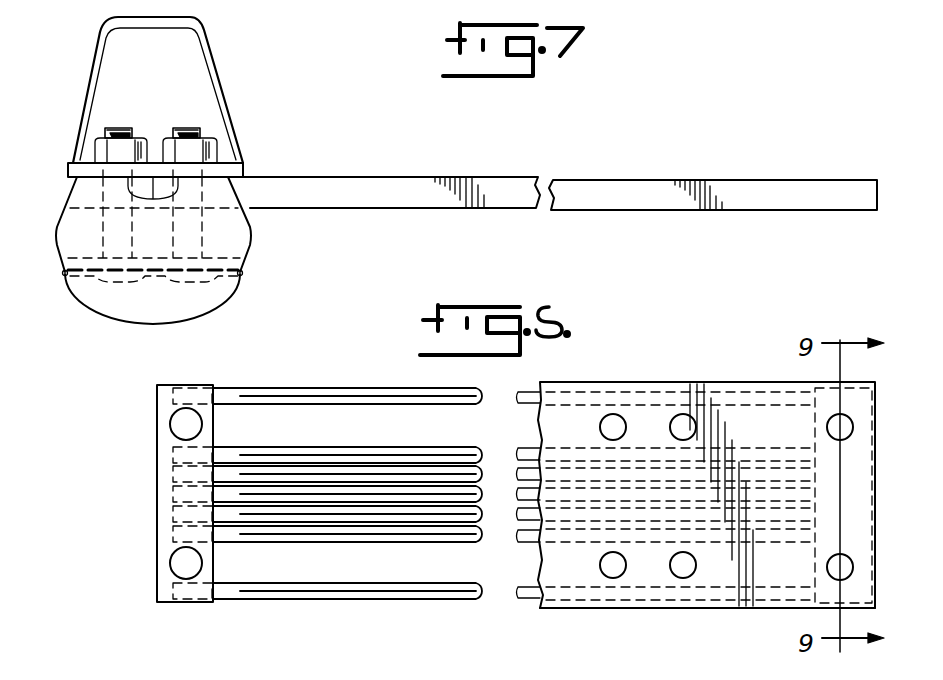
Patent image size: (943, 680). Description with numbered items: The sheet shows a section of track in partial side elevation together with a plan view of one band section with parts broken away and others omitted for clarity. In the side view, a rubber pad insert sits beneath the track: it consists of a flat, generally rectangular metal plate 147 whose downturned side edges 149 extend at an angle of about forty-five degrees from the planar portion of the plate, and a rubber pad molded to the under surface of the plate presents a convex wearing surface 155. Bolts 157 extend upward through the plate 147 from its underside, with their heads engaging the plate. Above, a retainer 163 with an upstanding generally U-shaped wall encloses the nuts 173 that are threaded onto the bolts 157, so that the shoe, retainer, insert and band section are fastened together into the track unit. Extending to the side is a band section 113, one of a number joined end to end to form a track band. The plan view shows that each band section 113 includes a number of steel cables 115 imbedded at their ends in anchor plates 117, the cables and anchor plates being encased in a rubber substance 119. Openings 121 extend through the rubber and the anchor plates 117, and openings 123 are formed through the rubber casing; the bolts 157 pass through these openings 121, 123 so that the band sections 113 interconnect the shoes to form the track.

In FIG. 7, the band section 113 is at (482, 177).
In FIG. 8, the band section 113 is at (583, 630).
In FIG. 8, the steel cables 115 is at (468, 398).
In FIG. 8, the anchor plates 117 is at (157, 508).
In FIG. 8, the rubber substance 119 is at (598, 352).
In FIG. 8, the openings 121 is at (840, 440).
In FIG. 8, the openings 123 is at (686, 414).
In FIG. 7, the metal plate 147 is at (213, 258).
In FIG. 7, the downturned side edges 149 is at (243, 275).
In FIG. 7, the convex wearing surface 155 is at (170, 325).
In FIG. 7, the bolts 157 is at (190, 127).
In FIG. 7, the retainers 163 is at (222, 60).
In FIG. 7, the nuts 173 is at (100, 150).